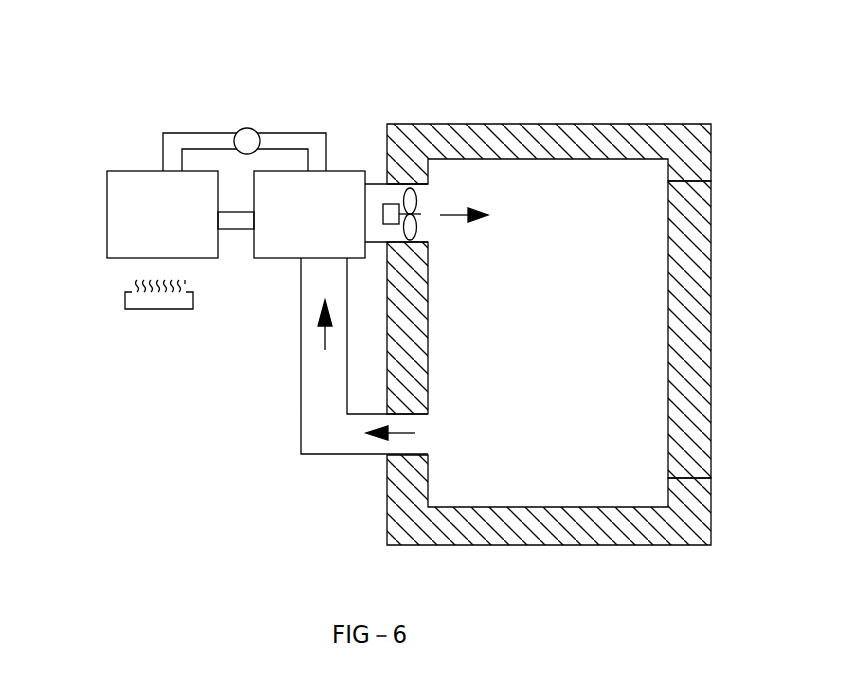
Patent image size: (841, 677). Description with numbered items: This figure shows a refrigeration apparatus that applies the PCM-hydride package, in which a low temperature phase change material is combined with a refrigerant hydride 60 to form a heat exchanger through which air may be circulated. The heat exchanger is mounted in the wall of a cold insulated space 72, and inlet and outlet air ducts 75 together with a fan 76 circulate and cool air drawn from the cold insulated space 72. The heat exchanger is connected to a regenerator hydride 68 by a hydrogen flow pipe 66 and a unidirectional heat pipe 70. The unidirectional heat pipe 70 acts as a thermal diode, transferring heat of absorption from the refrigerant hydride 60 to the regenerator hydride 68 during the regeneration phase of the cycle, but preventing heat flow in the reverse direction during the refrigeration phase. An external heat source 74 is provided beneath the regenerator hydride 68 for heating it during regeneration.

The refrigerant hydride 60 is at (343, 178).
The hydrogen flow pipe 66 is at (207, 138).
The regenerator hydride 68 is at (115, 235).
The unidirectional heat pipe 70 is at (235, 230).
The cold insulated space 72 is at (583, 182).
The external heat source 74 is at (145, 310).
The inlet and outlet air ducts 75 is at (313, 398).
The fan 76 is at (422, 227).